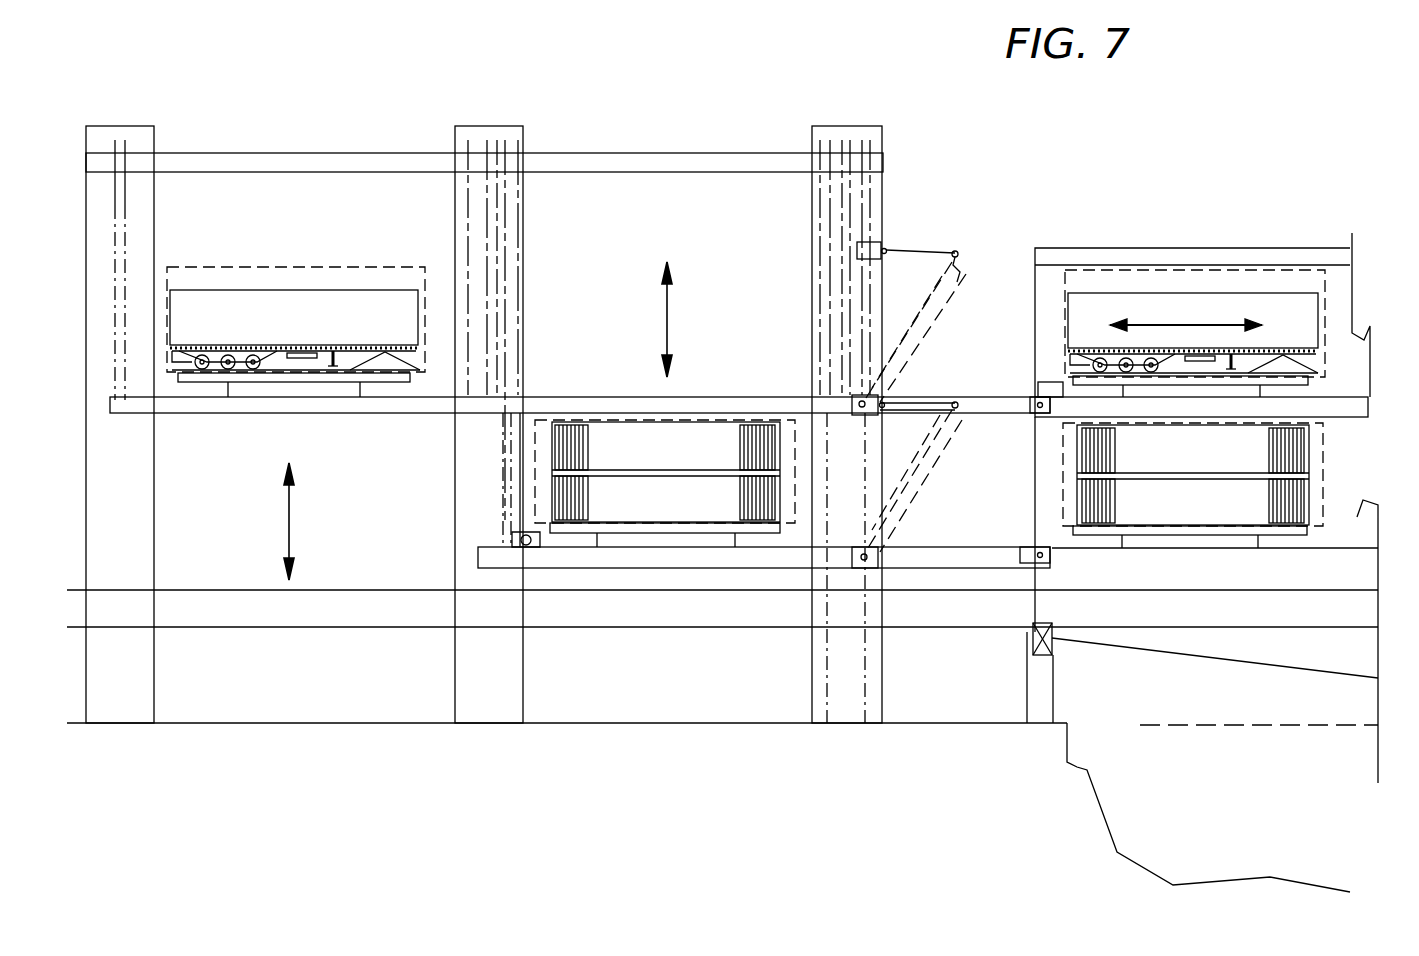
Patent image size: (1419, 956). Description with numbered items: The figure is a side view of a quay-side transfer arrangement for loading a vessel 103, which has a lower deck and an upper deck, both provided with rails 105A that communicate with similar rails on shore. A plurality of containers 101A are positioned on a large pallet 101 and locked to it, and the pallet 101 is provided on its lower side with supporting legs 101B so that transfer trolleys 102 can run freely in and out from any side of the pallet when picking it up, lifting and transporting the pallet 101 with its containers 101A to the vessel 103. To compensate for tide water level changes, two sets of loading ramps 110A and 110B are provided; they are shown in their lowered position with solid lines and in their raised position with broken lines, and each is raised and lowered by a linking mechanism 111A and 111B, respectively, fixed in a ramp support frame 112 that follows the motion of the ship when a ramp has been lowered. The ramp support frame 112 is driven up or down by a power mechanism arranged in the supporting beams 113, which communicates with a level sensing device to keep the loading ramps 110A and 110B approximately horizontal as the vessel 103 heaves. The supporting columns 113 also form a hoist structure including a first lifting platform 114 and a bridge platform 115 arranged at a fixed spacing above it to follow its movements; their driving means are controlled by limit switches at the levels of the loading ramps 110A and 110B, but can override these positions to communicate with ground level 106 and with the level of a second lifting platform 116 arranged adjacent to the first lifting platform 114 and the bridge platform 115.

The pallet 101 is at (270, 378).
The containers 101A is at (282, 300).
The supporting legs 101B is at (1262, 540).
The transfer trolleys 102 is at (1052, 388).
The vessel 103 is at (1097, 800).
The rails 105A is at (1340, 393).
The ground level 106 is at (640, 723).
The loading ramp 110A is at (997, 398).
The loading ramp 110B is at (905, 495).
The linking mechanism 111A is at (848, 400).
The linking mechanism 111B is at (866, 568).
The ramp support frame 112 is at (868, 252).
The supporting columns 113 is at (115, 135).
The first lifting platform 114 is at (735, 560).
The bridge platform 115 is at (560, 398).
The second lifting platform 116 is at (413, 405).